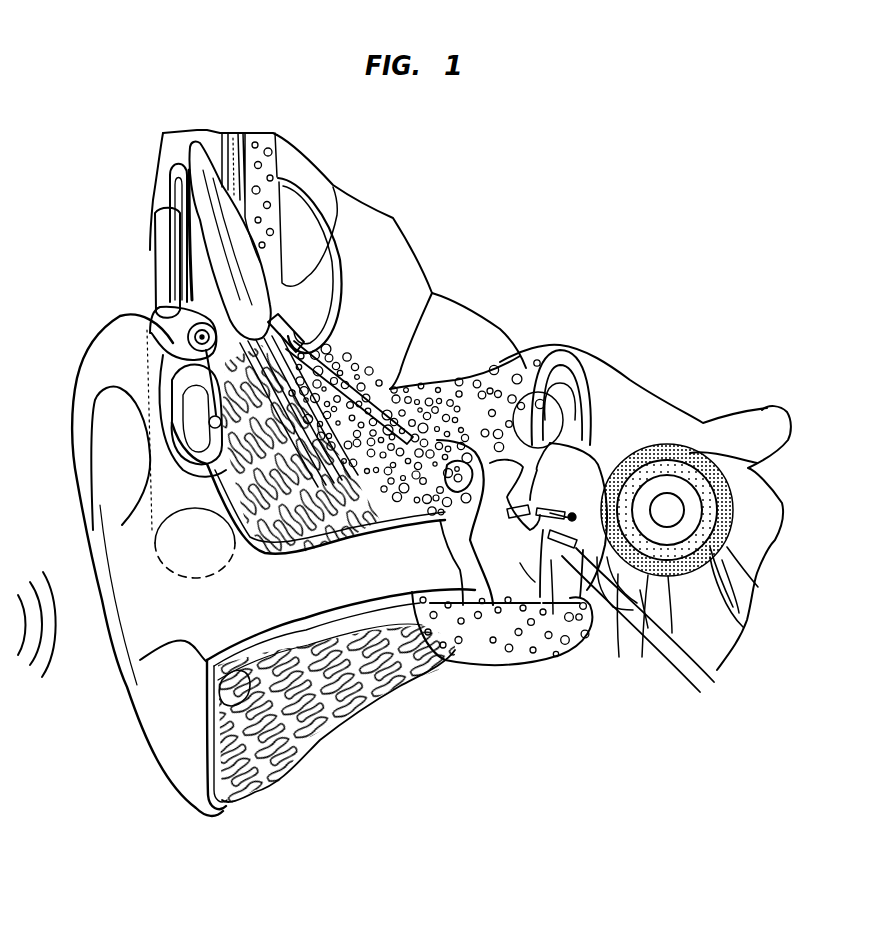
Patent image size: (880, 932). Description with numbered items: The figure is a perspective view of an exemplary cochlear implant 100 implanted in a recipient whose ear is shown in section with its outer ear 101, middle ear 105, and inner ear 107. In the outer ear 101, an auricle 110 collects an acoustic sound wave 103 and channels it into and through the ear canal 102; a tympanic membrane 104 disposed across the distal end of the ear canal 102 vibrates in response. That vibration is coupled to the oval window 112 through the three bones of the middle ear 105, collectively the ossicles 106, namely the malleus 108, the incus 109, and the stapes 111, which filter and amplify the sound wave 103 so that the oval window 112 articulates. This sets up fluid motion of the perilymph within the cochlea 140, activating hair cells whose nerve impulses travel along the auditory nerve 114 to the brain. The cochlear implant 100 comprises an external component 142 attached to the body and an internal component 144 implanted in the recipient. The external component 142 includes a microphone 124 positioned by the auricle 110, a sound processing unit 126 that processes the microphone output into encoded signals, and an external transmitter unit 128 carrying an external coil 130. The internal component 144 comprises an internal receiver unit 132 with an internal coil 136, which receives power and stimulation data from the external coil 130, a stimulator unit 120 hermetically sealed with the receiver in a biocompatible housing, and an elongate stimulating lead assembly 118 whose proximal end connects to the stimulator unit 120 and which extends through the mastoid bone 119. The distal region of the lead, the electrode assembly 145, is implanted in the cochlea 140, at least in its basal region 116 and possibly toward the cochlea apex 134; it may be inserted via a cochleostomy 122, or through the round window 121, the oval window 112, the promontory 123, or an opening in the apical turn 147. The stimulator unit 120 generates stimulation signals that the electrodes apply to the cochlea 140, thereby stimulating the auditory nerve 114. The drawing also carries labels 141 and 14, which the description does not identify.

The cochlear implant 100 is at (92, 190).
The outer ear 101 is at (195, 838).
The ear canal 102 is at (320, 583).
The sound wave 103 is at (51, 590).
The tympanic membrane 104 is at (472, 640).
The middle ear 105 is at (504, 708).
The ossicles 106 is at (517, 597).
The inner ear 107 is at (708, 742).
The malleus 108 is at (553, 425).
The incus 109 is at (543, 507).
The auricle 110 is at (148, 754).
The stapes 111 is at (578, 513).
The oval window 112 is at (690, 424).
The auditory nerve 114 is at (765, 420).
The basal region 116 is at (641, 625).
The elongate stimulating lead assembly 118 is at (432, 293).
The mastoid bone 119 is at (493, 388).
The stimulator unit 120 is at (330, 265).
The round window 121 is at (607, 610).
The cochleostomy 122 is at (570, 610).
The promontory 123 is at (553, 614).
The microphone 124 is at (183, 331).
The sound processing unit 126 is at (168, 310).
The external transmitter unit 128 is at (155, 247).
The external coil 130 is at (168, 180).
The internal receiver unit 132 is at (278, 180).
The cochlea apex 134 is at (743, 627).
The internal coil 136 is at (203, 130).
The cochlea 140 is at (758, 586).
The electrode array 141 is at (708, 478).
The cochlear implant lead 14 is at (728, 487).
The external component 142 is at (146, 98).
The internal component 144 is at (278, 98).
The electrode assembly 145 is at (648, 628).
The apical turn 147 is at (694, 574).